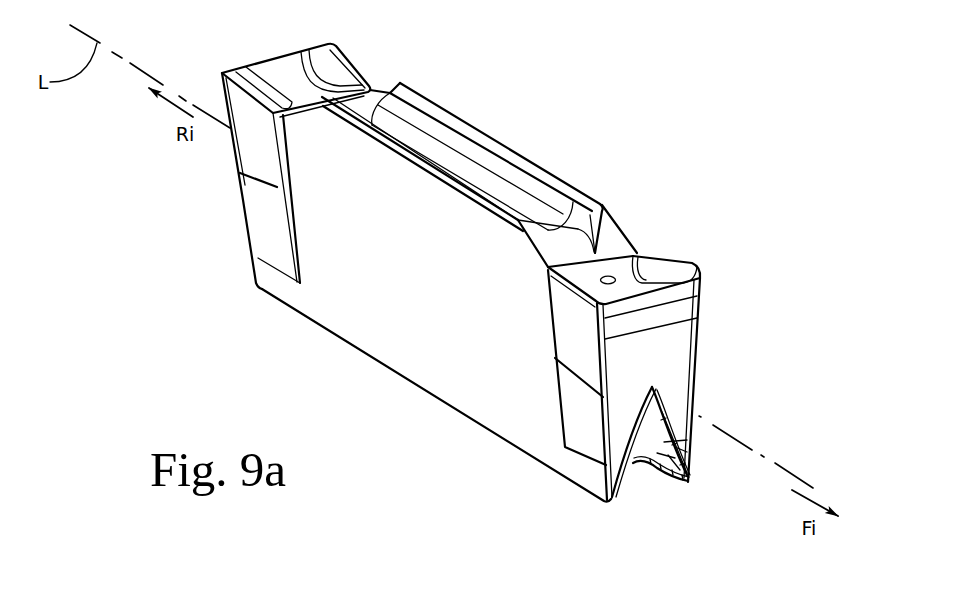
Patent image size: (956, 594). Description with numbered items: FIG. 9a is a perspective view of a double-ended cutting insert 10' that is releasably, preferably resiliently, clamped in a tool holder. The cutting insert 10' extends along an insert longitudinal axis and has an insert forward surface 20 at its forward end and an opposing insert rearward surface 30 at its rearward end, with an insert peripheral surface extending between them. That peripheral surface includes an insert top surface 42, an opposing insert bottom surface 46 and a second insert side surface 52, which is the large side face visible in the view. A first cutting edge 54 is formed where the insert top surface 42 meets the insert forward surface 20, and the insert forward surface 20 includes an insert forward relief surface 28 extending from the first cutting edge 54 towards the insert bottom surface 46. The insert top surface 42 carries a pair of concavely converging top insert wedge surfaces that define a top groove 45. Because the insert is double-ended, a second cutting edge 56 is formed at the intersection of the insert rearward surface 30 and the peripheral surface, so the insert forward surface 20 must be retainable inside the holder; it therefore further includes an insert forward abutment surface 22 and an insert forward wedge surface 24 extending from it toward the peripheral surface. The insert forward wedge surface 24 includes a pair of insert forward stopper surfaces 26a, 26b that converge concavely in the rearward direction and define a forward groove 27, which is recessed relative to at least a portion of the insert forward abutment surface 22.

The cutting insert 10' is at (485, 299).
The insert forward surface 20 is at (763, 391).
The insert forward abutment surface 22 is at (670, 344).
The insert forward wedge surface 24 is at (674, 392).
The insert forward stopper surface 26a is at (692, 469).
The insert forward stopper surface 26b is at (628, 468).
The forward groove 27 is at (655, 511).
The insert forward relief surface 28 is at (680, 292).
The insert rearward surface 30 is at (214, 179).
The insert top surface 42 is at (423, 74).
The top groove 45 is at (577, 229).
The insert bottom surface 46 is at (316, 334).
The second insert side surface 52 is at (420, 367).
The first cutting edge 54 is at (694, 266).
The second cutting edge 56 is at (273, 61).